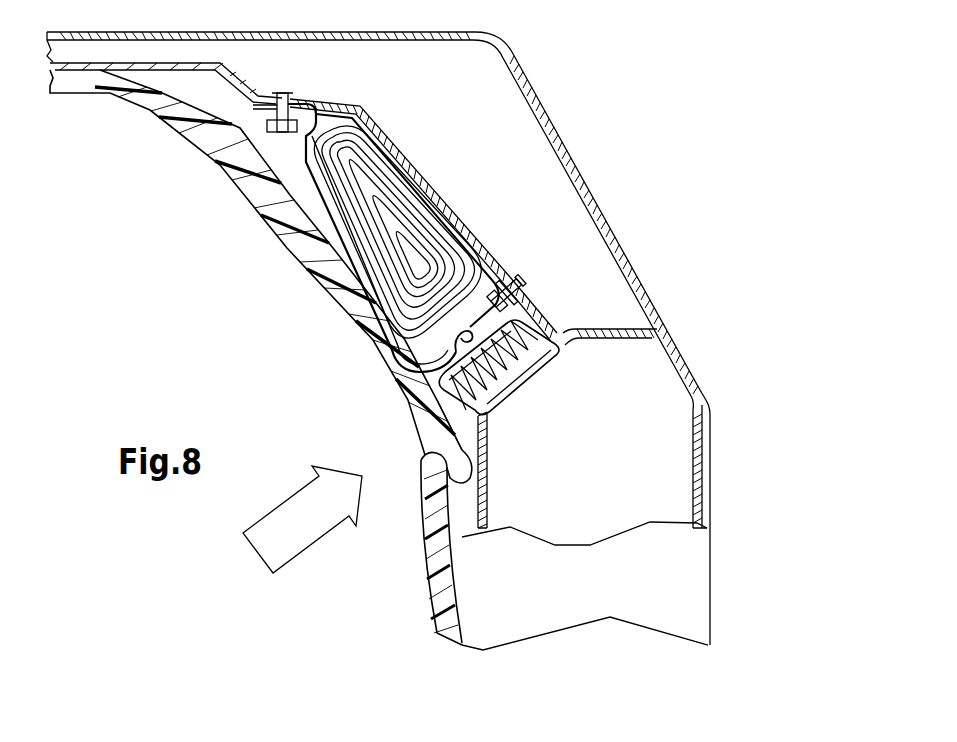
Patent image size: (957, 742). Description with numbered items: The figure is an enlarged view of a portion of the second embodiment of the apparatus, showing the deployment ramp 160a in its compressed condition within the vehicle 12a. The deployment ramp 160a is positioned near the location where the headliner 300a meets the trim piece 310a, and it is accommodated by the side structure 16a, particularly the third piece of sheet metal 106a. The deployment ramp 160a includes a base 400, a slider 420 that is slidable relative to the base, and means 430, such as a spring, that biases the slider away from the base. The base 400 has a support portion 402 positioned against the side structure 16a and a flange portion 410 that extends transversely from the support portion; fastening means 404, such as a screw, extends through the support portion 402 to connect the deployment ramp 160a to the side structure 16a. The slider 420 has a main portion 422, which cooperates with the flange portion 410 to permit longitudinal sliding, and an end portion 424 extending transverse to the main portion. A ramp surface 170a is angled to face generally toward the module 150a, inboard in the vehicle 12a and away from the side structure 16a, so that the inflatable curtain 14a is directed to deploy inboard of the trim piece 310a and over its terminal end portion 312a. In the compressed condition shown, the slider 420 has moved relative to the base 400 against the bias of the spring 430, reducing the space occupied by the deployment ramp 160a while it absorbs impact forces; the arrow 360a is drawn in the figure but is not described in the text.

The vehicle 12a is at (630, 131).
The inflatable curtain 14a is at (398, 220).
The side structure 16a is at (732, 448).
The third piece of sheet metal 106a is at (517, 382).
The module 150a is at (173, 160).
The deployment ramp 160a is at (424, 362).
The ramp surface 170a is at (437, 368).
The headliner 300a is at (247, 182).
The trim piece 310a is at (440, 617).
The terminal end portion 312a is at (427, 473).
The airflow direction 360a is at (273, 540).
The base 400 is at (530, 302).
The support portion 402 is at (524, 288).
The fastening means 404 is at (515, 280).
The flange portion 410 is at (512, 316).
The slider 420 is at (500, 375).
The main portion 422 is at (440, 380).
The end portion 424 is at (423, 432).
The means for biasing 430 is at (492, 378).